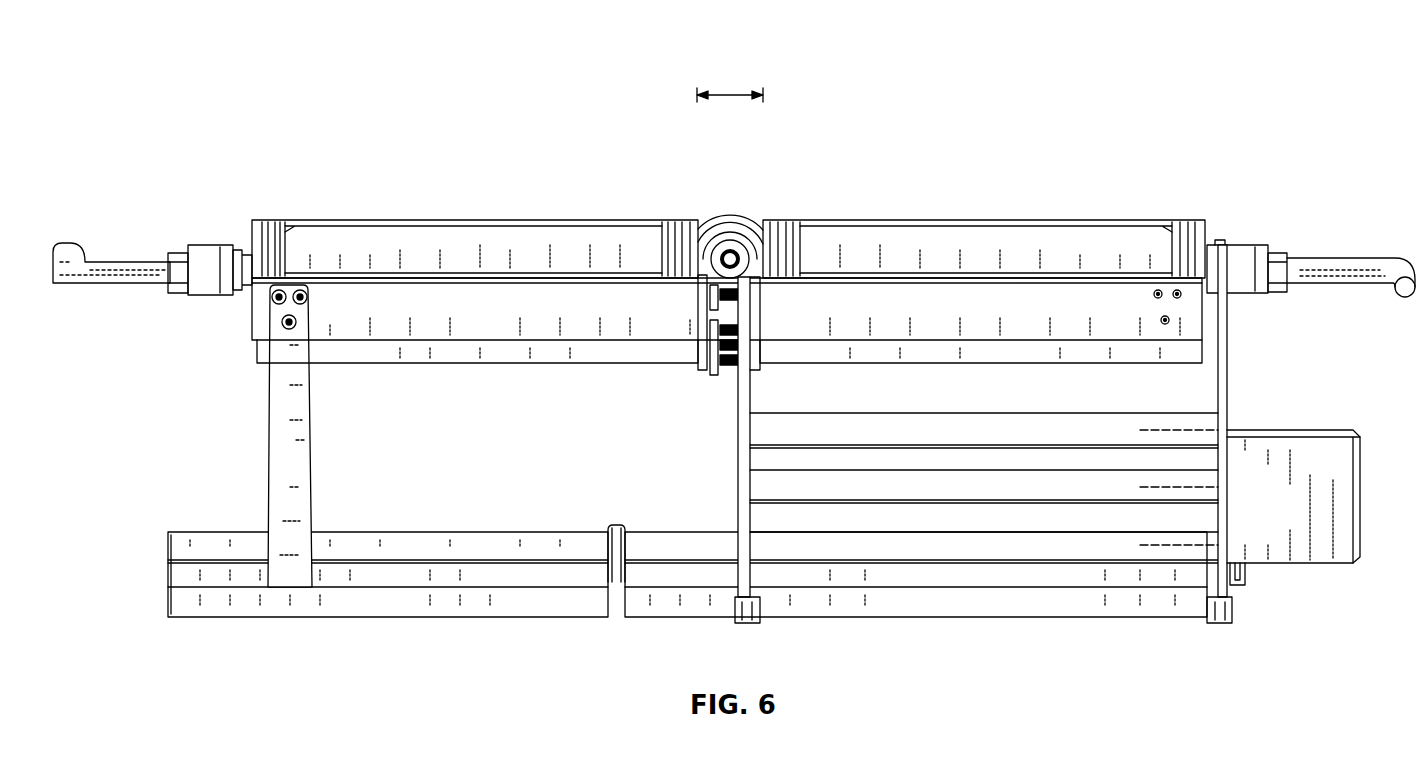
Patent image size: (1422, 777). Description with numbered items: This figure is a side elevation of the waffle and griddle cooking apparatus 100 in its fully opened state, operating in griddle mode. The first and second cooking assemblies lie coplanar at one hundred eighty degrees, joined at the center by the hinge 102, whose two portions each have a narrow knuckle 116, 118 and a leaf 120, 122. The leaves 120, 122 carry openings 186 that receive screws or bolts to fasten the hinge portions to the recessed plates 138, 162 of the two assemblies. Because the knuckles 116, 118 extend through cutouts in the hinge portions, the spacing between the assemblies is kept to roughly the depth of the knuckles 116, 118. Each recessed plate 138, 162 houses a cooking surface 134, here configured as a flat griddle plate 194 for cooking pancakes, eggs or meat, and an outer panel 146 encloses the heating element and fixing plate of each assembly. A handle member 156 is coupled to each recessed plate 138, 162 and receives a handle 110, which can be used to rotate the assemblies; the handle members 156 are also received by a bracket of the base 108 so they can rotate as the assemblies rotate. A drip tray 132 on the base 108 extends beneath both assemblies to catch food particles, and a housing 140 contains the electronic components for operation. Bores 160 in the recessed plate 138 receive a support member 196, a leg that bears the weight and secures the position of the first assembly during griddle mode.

The waffle and griddle cooking apparatus 100 is at (310, 155).
The hinge 102 is at (722, 192).
The base 108 is at (1025, 425).
The handle 110 is at (112, 262).
The knuckle 116 is at (715, 216).
The knuckle 118 is at (748, 218).
The leaf 120 is at (697, 362).
The leaf 122 is at (760, 352).
The drip tray 132 is at (372, 607).
The cooking surface 134 is at (507, 238).
The recessed plate 138 is at (485, 328).
The housing 140 is at (1292, 430).
The outer panel 146 is at (553, 348).
The handle member 156 is at (205, 255).
The bores 160 is at (268, 295).
The recessed plate 162 is at (975, 325).
The openings 186 is at (737, 265).
The griddle plate 194 is at (330, 245).
The support member 196 is at (300, 442).